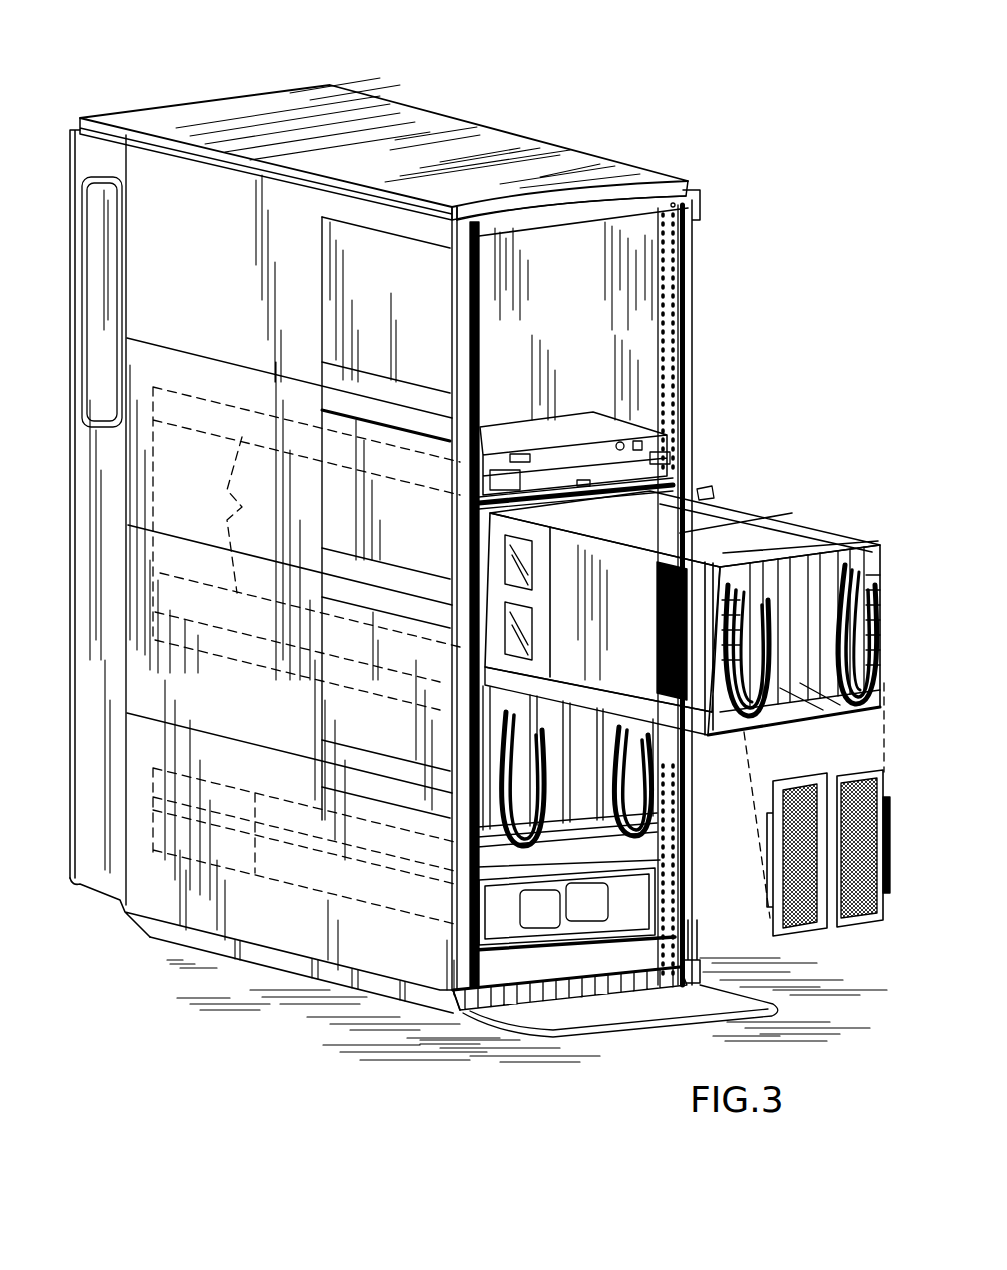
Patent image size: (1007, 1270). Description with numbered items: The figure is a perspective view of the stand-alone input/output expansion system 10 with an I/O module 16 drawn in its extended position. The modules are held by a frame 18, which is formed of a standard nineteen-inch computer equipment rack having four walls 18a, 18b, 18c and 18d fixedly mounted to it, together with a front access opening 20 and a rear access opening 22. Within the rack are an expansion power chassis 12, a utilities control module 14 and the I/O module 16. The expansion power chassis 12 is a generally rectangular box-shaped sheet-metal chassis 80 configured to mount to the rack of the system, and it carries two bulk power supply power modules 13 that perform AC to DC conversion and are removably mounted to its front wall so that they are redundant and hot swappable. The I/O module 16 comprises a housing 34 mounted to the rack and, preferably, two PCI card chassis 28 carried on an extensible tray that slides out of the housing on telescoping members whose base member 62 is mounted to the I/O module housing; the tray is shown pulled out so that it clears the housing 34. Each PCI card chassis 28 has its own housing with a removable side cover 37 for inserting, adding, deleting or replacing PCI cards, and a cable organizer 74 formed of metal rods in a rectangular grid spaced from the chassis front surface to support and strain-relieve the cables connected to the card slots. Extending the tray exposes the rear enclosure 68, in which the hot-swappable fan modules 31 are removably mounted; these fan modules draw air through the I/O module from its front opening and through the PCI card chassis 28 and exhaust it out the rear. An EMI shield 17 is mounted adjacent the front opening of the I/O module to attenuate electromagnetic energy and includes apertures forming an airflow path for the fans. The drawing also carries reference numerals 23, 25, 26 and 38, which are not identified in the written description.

The I/O expansion system 10 is at (298, 62).
The expansion power chassis 12 is at (627, 900).
The power modules 13 is at (583, 907).
The utilities control module 14 is at (690, 493).
The I/O module 16 is at (797, 510).
The EMI shield 17 is at (855, 770).
The frame 18 is at (692, 228).
The wall 18a is at (148, 905).
The wall 18b is at (630, 160).
The wall 18c is at (692, 255).
The wall 18d is at (65, 865).
The front access opening 20 is at (698, 266).
The rear access opening 22 is at (160, 103).
The cable 23 is at (653, 740).
The handle 25 is at (92, 200).
The side rail 26 is at (72, 130).
The PCI card chassis 28 is at (797, 523).
The fan module 31 is at (515, 600).
The housing 34 is at (705, 492).
The removable side cover 37 is at (780, 537).
The side panel 38 is at (478, 528).
The base member 62 is at (232, 507).
The rear enclosure 68 is at (700, 493).
The cable organizer 74 is at (847, 560).
The sheet-metal chassis 80 is at (657, 887).